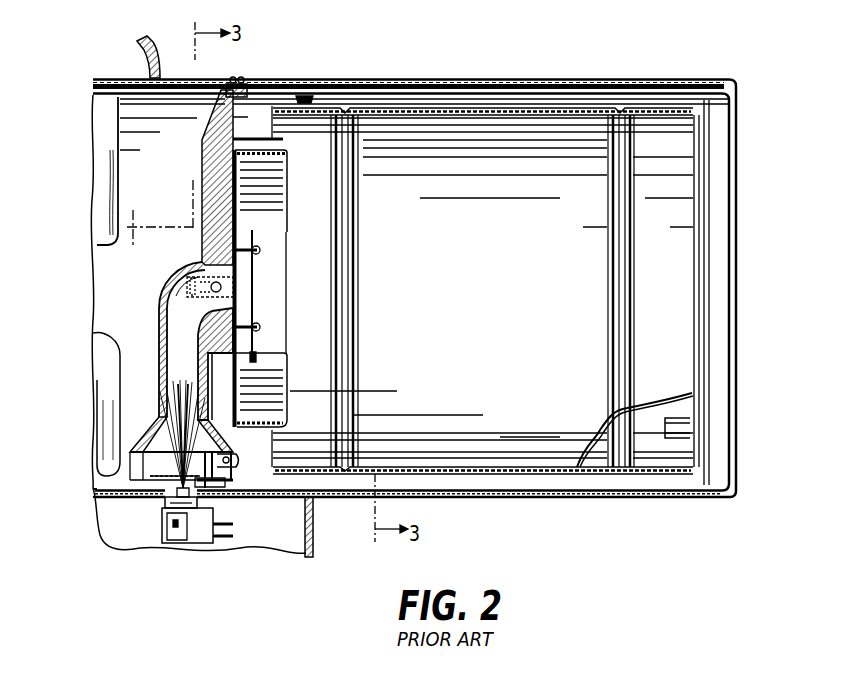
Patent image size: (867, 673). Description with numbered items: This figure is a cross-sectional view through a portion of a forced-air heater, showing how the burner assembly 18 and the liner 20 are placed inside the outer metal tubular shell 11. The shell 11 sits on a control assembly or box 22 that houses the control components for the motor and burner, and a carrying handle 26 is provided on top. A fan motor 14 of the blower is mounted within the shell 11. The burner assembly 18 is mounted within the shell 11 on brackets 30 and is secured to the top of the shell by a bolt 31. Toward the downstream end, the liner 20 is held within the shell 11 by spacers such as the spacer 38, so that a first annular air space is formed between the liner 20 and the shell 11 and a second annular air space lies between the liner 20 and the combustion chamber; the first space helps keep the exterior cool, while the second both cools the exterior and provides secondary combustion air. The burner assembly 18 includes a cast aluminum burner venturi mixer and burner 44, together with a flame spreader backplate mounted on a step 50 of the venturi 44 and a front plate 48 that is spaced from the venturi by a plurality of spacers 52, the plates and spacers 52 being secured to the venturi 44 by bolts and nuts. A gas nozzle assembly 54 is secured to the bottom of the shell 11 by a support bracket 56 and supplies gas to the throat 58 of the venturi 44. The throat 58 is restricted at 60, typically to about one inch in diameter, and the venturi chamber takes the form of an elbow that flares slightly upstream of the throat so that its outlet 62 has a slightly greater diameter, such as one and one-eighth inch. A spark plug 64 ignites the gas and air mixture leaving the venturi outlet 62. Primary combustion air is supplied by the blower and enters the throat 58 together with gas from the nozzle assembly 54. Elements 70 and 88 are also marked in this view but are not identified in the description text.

The outer metal tubular shell 11 is at (643, 86).
The fan motor 14 is at (108, 185).
The burner assembly 18 is at (150, 308).
The liner 20 is at (572, 126).
The control assembly or box 22 is at (314, 532).
The carrying handle 26 is at (157, 46).
The brackets 30 is at (222, 489).
The bolt 31 is at (245, 78).
The spacer 38 is at (680, 431).
The burner venturi mixer and burner 44 is at (158, 385).
The front plate 48 is at (257, 301).
The step 50 is at (240, 347).
The spacers 52 is at (258, 243).
The gas nozzle assembly 54 is at (165, 531).
The support bracket 56 is at (163, 502).
The throat 58 is at (128, 455).
The restriction 60 is at (158, 338).
The outlet 62 is at (237, 280).
The spark plug 64 is at (197, 264).
The bottom wall end 70 is at (93, 488).
The sealing wedge 88 is at (312, 96).